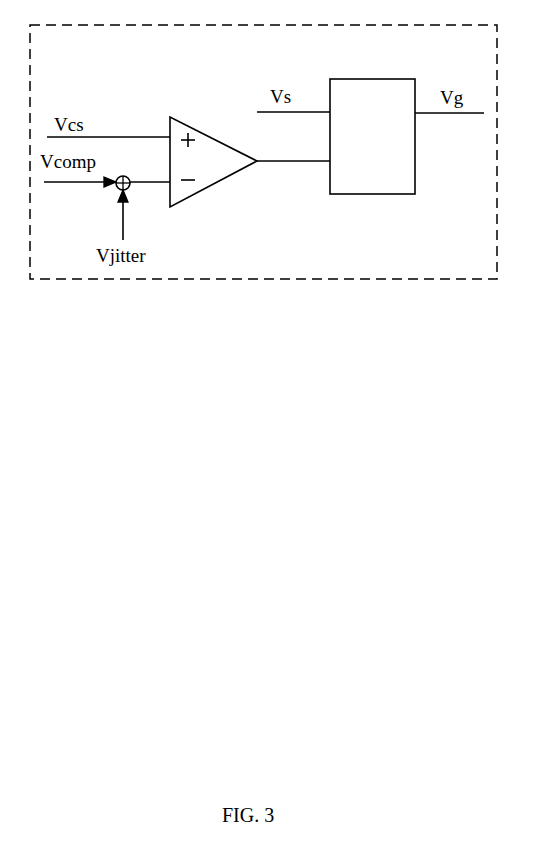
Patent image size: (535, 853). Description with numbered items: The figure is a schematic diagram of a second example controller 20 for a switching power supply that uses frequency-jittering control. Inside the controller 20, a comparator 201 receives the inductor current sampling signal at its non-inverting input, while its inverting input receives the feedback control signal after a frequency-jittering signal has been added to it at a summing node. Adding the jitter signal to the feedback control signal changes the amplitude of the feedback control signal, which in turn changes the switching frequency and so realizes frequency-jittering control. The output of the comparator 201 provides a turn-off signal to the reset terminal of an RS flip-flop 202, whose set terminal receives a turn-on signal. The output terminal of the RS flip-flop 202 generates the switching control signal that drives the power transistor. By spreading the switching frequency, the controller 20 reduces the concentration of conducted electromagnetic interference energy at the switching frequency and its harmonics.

The controller 20 is at (475, 63).
The comparator 201 is at (230, 175).
The RS flip-flop 202 is at (415, 155).